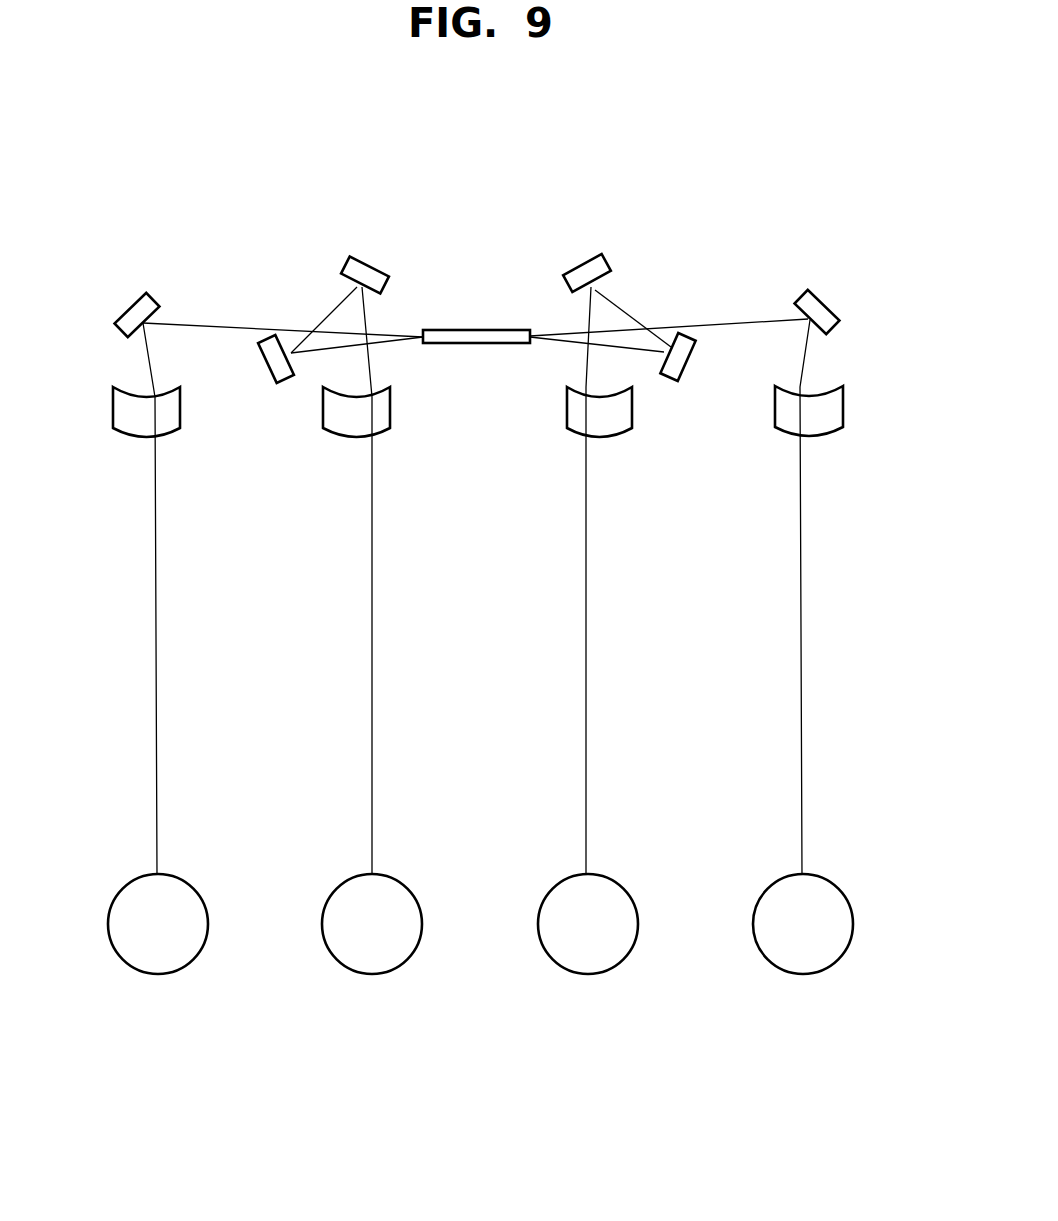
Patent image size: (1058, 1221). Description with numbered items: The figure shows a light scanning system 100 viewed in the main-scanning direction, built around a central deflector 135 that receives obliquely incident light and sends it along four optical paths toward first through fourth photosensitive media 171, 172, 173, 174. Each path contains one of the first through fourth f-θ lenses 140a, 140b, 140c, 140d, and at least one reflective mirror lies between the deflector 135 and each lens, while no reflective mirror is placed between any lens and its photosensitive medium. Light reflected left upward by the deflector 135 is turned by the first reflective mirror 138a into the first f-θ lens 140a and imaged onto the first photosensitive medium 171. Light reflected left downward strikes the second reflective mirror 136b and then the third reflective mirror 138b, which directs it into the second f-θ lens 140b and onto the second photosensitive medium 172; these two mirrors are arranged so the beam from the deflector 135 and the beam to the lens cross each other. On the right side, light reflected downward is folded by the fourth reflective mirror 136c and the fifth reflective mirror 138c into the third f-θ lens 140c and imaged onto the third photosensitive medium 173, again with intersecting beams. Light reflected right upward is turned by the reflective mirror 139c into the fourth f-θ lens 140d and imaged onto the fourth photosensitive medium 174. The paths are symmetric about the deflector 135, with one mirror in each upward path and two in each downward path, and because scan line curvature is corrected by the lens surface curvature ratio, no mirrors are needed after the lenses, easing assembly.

The light scanning system 100 is at (757, 185).
The deflector 135 is at (473, 328).
The second reflective mirror 136b is at (262, 378).
The fourth reflective mirror 136c is at (683, 378).
The first reflective mirror 138a is at (134, 300).
The third reflective mirror 138b is at (371, 257).
The fifth reflective mirror 138c is at (586, 260).
The reflective mirror 139c is at (820, 296).
The first f-θ lens 140a is at (133, 437).
The second f-θ lens 140b is at (339, 437).
The third f-θ lens 140c is at (603, 429).
The fourth f-θ lens 140d is at (823, 428).
The first photosensitive medium 171 is at (158, 975).
The second photosensitive medium 172 is at (372, 975).
The third photosensitive medium 173 is at (588, 975).
The fourth photosensitive medium 174 is at (803, 975).